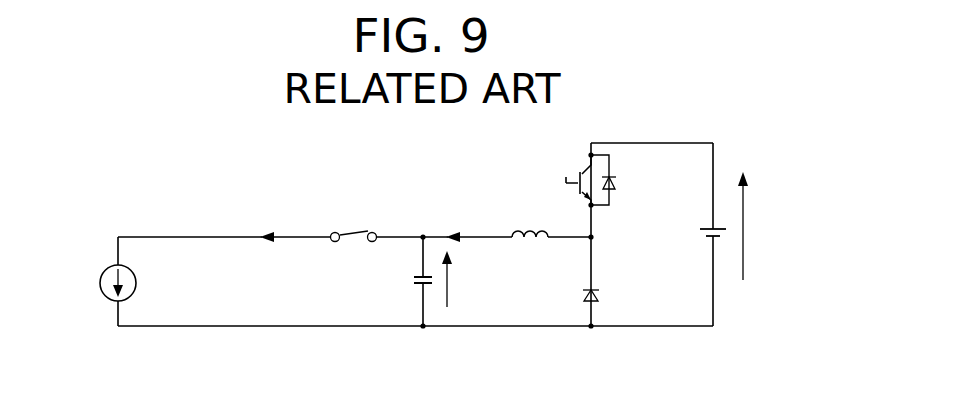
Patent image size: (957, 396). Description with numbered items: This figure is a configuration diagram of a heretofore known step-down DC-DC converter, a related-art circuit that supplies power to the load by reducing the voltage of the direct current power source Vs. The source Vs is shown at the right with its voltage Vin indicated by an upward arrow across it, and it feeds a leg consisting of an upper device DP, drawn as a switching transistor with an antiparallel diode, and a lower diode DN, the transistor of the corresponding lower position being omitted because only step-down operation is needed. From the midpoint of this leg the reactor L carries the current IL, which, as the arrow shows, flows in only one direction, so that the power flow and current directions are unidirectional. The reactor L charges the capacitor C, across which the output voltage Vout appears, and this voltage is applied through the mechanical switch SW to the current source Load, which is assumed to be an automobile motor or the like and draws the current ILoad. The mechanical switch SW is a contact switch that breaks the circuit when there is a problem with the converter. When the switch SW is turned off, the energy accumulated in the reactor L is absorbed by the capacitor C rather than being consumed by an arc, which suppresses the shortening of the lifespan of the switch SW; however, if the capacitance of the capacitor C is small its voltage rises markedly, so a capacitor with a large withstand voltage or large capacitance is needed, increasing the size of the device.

The current source Load is at (84, 283).
The current of the current source Load ILoad is at (283, 219).
The mechanical switch SW is at (354, 254).
The capacitor C is at (409, 281).
The output voltage Vout is at (474, 279).
The current of the reactor L IL is at (465, 219).
The reactor L is at (530, 216).
The element DP is at (610, 180).
The element DN is at (615, 293).
The direct current power source Vs is at (698, 231).
The element Vin is at (761, 226).